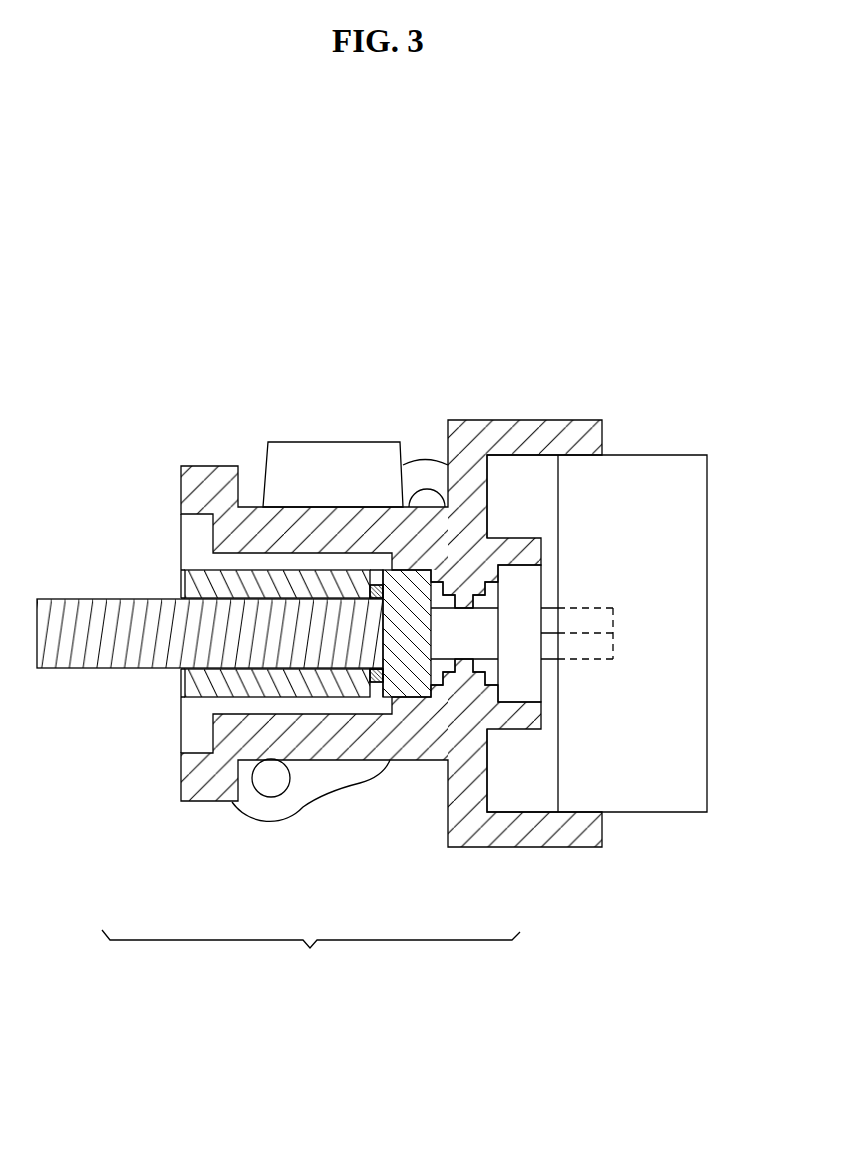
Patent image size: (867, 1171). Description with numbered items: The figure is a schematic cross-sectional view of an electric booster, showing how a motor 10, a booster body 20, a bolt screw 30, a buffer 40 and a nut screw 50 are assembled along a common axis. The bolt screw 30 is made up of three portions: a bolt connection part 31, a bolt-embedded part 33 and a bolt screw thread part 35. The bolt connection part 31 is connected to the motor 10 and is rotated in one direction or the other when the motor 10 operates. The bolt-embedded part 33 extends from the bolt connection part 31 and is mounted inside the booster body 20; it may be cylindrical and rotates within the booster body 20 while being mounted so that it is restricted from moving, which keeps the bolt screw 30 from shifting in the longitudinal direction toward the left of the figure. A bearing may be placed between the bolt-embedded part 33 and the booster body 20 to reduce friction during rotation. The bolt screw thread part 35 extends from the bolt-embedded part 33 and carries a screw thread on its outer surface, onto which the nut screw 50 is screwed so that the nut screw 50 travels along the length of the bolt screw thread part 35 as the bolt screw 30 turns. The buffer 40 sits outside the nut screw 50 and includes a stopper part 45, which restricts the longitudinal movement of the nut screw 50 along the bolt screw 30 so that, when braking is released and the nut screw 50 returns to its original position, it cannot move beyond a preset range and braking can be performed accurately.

The motor 10 is at (665, 792).
The booster body 20 is at (495, 383).
The bolt screw 30 is at (311, 956).
The bolt connection part 31 is at (590, 650).
The bolt-embedded part 33 is at (522, 677).
The bolt screw thread part 35 is at (96, 653).
The buffer 40 is at (376, 587).
The stopper part 45 is at (377, 522).
The nut screw 50 is at (298, 587).